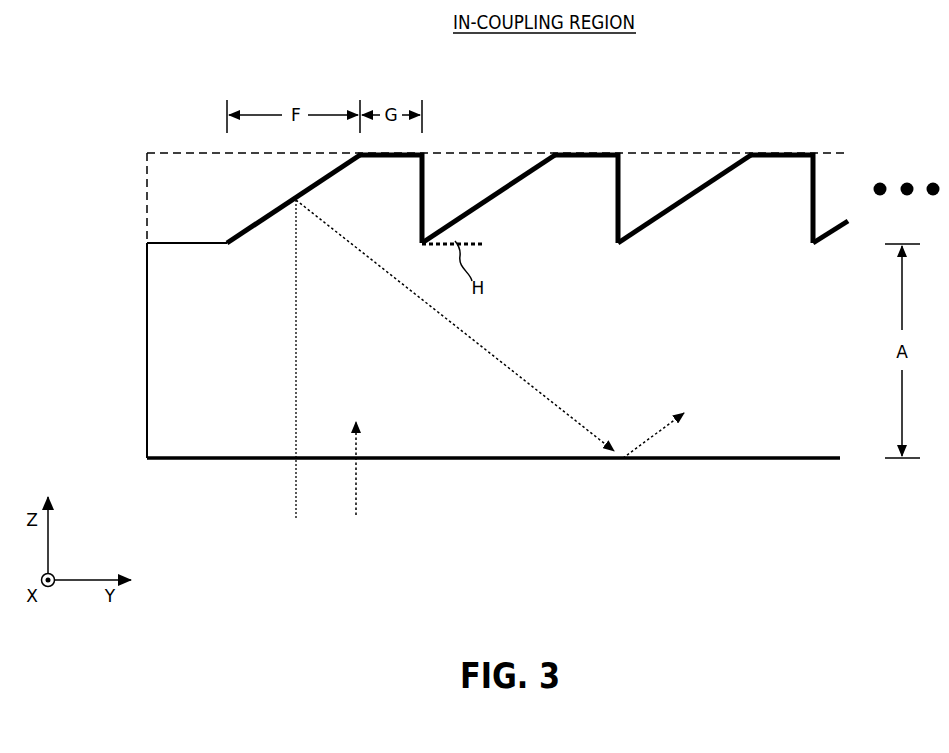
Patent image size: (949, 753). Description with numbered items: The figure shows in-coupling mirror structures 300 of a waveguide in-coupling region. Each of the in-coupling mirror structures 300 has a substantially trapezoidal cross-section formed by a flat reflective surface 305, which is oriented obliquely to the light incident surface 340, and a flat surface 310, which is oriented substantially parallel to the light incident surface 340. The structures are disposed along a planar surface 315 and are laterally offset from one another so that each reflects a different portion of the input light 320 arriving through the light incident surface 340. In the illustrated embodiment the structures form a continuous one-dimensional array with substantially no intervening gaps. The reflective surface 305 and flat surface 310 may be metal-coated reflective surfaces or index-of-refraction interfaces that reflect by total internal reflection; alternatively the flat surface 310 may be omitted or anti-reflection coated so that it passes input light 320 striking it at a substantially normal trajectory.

The in-coupling mirror structures 300 is at (182, 72).
The flat reflective surface 305 is at (272, 211).
The flat surface 310 is at (584, 155).
The planar surface 315 is at (185, 243).
The input light 320 is at (296, 498).
The light incident surface 340 is at (200, 459).